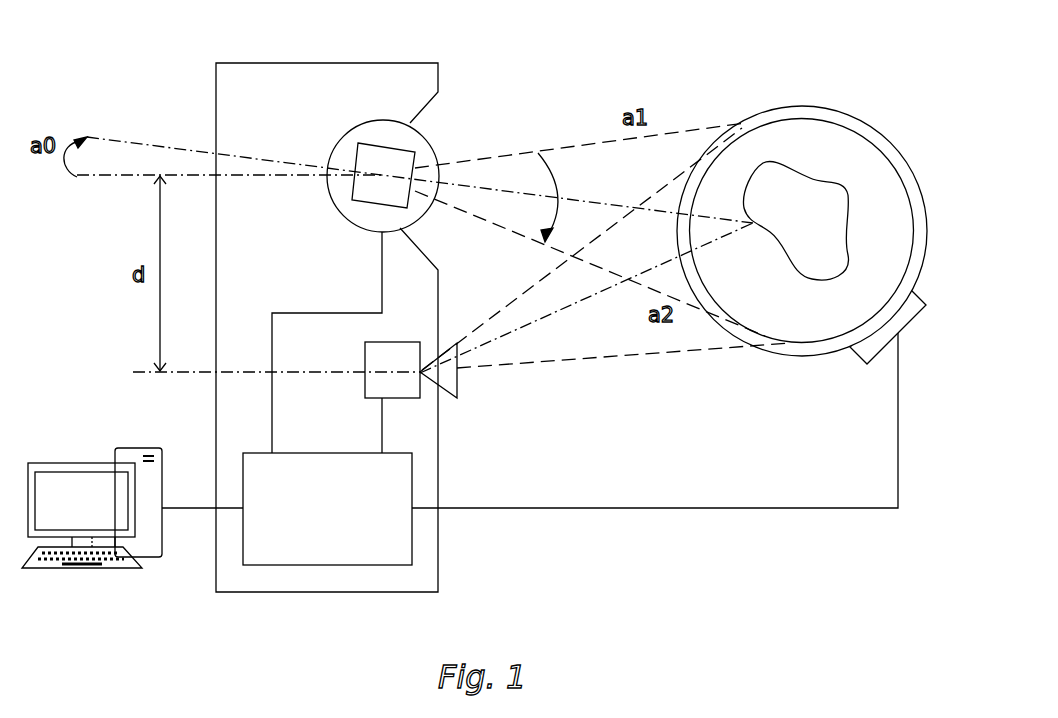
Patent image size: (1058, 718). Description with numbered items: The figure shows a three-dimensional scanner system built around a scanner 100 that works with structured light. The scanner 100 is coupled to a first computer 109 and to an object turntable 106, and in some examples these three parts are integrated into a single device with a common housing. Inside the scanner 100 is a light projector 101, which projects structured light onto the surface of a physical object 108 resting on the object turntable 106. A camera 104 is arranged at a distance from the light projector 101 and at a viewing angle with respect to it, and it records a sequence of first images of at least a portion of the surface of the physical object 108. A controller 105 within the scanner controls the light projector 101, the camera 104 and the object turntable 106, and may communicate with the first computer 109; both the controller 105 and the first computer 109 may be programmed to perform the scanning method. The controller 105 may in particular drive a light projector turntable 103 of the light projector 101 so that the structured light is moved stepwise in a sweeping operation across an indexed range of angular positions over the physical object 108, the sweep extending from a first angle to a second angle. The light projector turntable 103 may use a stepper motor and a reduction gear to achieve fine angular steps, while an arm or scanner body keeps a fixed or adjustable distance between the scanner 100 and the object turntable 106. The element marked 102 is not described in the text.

The 3D scanner 100 is at (272, 63).
The light projector 101 is at (446, 113).
The anode / target 102 is at (357, 167).
The light projector turntable 103 is at (432, 147).
The camera 104 is at (413, 400).
The controller 105 is at (348, 520).
The object turntable 106 is at (798, 357).
The physical object 108 is at (826, 226).
The first computer 109 is at (50, 571).